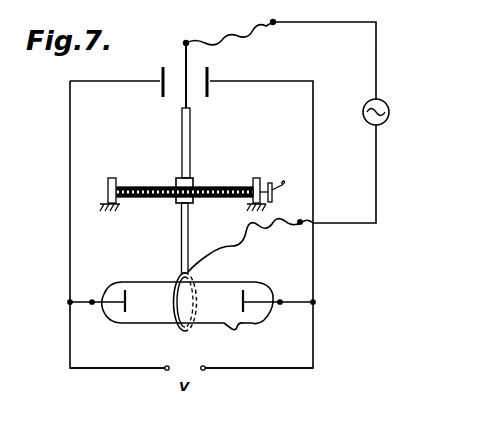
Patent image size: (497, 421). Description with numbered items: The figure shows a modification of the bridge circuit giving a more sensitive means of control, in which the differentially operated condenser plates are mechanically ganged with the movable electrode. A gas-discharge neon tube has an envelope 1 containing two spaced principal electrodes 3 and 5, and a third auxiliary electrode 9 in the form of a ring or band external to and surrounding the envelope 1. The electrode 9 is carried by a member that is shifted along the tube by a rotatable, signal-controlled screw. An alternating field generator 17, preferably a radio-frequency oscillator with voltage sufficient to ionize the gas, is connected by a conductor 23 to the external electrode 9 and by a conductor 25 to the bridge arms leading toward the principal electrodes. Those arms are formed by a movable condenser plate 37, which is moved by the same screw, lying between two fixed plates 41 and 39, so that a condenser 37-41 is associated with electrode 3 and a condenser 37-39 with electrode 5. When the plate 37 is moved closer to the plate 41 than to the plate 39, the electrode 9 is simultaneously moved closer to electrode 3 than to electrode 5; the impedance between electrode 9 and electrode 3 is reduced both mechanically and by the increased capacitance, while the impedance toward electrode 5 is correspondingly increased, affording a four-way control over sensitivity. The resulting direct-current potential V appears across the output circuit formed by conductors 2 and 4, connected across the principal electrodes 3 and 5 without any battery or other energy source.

The envelope 1 is at (134, 323).
The output conductor 2 is at (143, 369).
The principal electrode 3 is at (126, 290).
The output conductor 4 is at (245, 369).
The principal electrode 5 is at (236, 283).
The movable external electrode 9 is at (181, 330).
The alternating field generator 17 is at (390, 121).
The conductor 23 is at (348, 225).
The conductor 25 is at (328, 24).
The movable condenser plate 37 is at (182, 51).
The condenser plate 39 is at (209, 91).
The condenser plate 41 is at (158, 88).